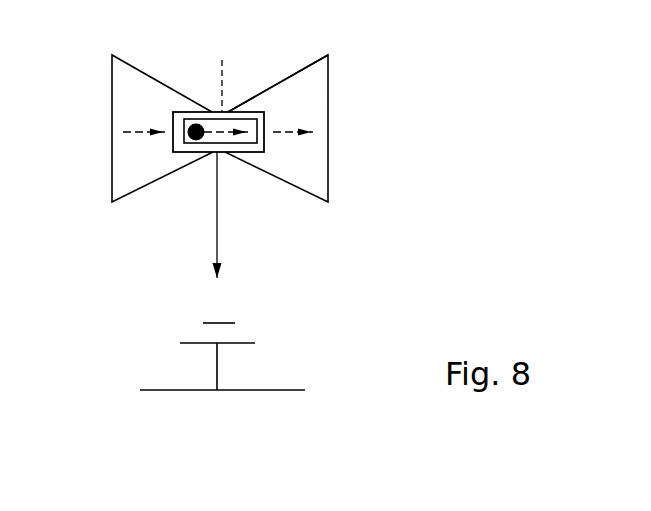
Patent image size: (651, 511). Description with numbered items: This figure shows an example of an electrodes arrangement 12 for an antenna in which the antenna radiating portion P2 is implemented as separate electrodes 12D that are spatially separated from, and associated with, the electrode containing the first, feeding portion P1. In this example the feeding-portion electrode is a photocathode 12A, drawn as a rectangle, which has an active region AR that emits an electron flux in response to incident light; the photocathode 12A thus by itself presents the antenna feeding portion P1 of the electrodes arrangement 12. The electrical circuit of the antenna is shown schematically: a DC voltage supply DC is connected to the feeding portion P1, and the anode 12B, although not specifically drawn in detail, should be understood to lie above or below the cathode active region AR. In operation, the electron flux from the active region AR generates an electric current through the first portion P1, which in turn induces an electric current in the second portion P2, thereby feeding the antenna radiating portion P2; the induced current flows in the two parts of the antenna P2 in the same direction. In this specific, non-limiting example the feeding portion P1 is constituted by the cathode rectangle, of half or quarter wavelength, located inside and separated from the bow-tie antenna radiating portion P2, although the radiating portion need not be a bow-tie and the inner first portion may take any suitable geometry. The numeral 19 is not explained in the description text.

The electrodes arrangement 12 is at (372, 85).
The photocathode 12A is at (228, 119).
The anode 12B is at (158, 390).
The separate electrodes 12D is at (278, 83).
The electrode element 19 is at (177, 125).
The feeding portion P1 is at (215, 112).
The antenna radiating portion P2 is at (127, 167).
The active region AR is at (197, 143).
The DC voltage supply DC is at (216, 215).